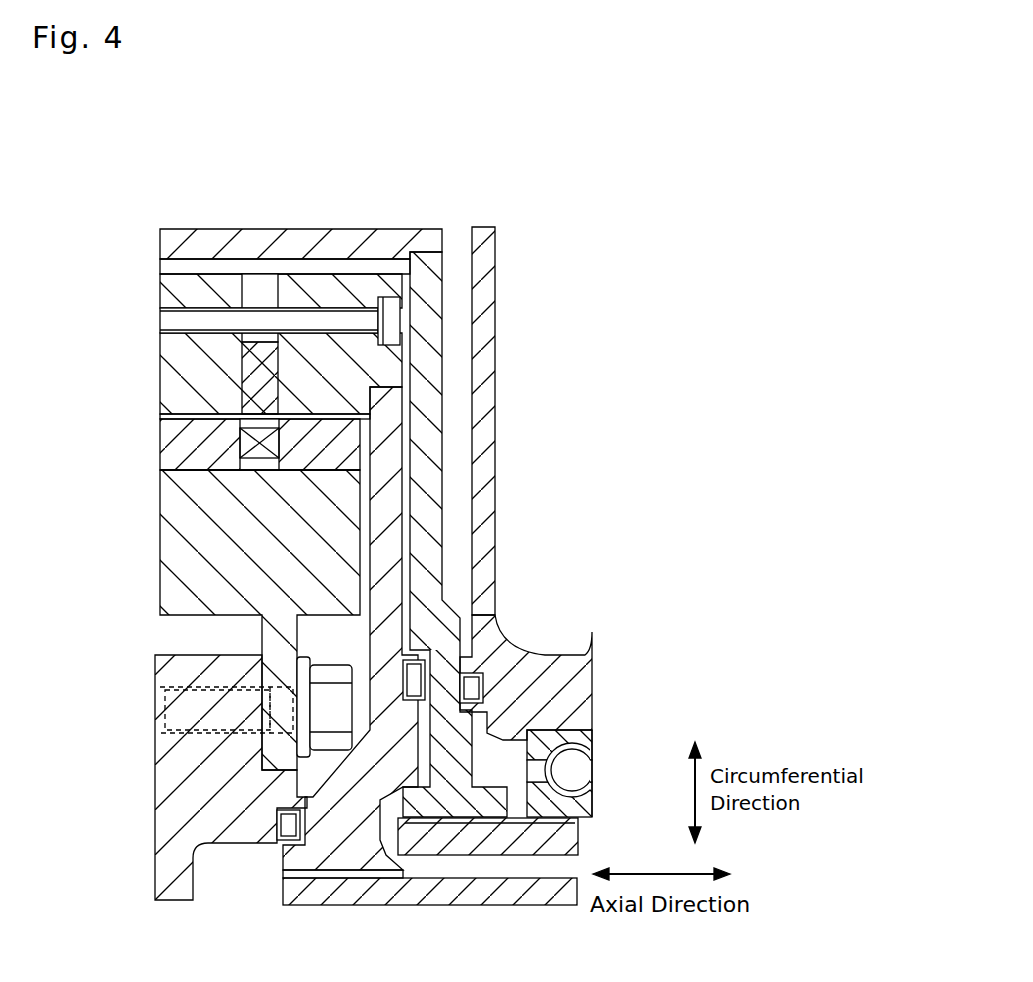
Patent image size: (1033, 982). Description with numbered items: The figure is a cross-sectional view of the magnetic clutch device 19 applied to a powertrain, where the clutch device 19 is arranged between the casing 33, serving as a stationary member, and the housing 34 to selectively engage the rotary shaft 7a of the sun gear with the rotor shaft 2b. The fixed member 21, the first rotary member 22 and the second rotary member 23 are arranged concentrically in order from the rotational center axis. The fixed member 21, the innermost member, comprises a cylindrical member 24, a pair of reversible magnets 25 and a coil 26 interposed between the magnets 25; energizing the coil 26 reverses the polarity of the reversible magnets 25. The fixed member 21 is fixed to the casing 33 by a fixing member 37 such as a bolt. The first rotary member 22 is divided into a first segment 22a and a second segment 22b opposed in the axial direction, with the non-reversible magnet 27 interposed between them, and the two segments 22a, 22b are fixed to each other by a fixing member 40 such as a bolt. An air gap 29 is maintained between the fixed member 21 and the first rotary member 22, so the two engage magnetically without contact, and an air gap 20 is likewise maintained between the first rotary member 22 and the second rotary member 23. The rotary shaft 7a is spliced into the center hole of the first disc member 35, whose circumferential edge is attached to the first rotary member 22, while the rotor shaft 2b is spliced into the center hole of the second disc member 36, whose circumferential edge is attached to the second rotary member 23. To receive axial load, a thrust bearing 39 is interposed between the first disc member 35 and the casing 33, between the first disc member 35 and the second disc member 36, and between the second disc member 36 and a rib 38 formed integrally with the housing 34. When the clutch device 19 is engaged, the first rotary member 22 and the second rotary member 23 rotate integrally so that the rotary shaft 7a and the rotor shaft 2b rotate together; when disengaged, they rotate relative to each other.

The clutch device 19 is at (560, 184).
The second rotary member 23 is at (166, 248).
The air gap 20 is at (166, 271).
The non-reversible magnet 27 is at (225, 343).
The fixing member 40 is at (392, 318).
The first rotary member 22 is at (93, 358).
The first segment 22a is at (186, 377).
The second segment 22b is at (290, 405).
The air gap 29 is at (176, 418).
The fixed member 21 is at (90, 453).
The reversible magnet 25 is at (200, 446).
The coil 26 is at (250, 472).
The cylindrical member 24 is at (176, 550).
The casing 33 is at (166, 781).
The fixing member 37 is at (166, 705).
The first disc member 35 is at (385, 455).
The second disc member 36 is at (430, 368).
The rib 38 is at (486, 523).
The housing 34 is at (518, 566).
The thrust bearing 39 is at (416, 672).
The rotor shaft 2b is at (575, 826).
The rotary shaft 7a is at (418, 896).